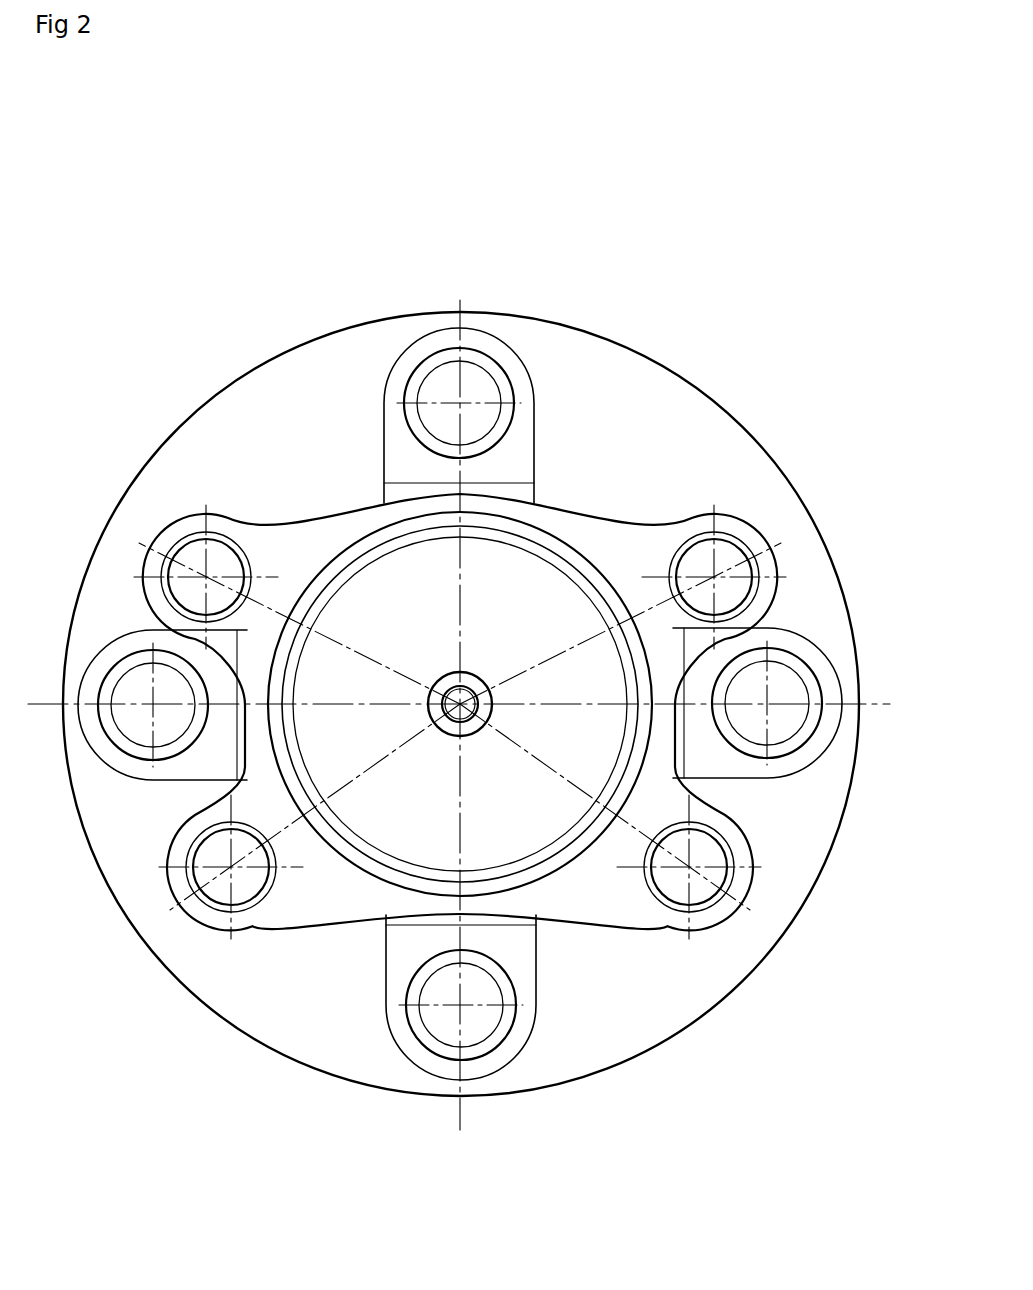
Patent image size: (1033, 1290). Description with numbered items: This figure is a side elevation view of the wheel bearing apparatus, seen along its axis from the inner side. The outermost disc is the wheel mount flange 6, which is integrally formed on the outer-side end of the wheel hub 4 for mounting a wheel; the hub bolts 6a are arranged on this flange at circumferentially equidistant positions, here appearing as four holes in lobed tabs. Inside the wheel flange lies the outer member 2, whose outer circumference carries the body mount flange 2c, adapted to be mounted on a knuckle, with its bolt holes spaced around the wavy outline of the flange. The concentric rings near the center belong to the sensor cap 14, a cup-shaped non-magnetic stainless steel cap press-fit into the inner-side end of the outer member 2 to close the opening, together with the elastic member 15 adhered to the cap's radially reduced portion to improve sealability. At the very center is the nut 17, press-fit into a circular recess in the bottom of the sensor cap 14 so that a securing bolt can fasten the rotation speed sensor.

The wheel hub 4 is at (694, 323).
The wheel mount flange 6 is at (590, 353).
The hub bolts 6a is at (472, 378).
The outer member 2 is at (578, 540).
The body mount flange 2c is at (152, 569).
The sensor cap 14 is at (366, 598).
The elastic member 15 is at (383, 552).
The nut 17 is at (468, 688).